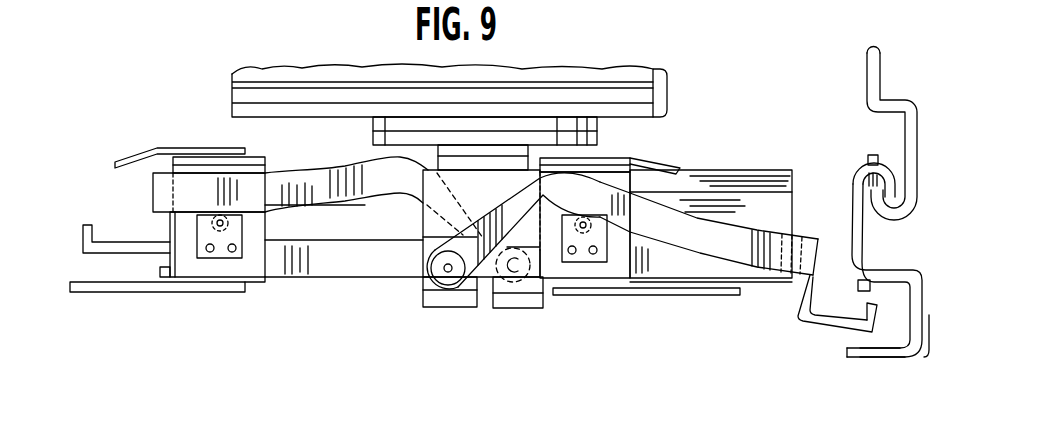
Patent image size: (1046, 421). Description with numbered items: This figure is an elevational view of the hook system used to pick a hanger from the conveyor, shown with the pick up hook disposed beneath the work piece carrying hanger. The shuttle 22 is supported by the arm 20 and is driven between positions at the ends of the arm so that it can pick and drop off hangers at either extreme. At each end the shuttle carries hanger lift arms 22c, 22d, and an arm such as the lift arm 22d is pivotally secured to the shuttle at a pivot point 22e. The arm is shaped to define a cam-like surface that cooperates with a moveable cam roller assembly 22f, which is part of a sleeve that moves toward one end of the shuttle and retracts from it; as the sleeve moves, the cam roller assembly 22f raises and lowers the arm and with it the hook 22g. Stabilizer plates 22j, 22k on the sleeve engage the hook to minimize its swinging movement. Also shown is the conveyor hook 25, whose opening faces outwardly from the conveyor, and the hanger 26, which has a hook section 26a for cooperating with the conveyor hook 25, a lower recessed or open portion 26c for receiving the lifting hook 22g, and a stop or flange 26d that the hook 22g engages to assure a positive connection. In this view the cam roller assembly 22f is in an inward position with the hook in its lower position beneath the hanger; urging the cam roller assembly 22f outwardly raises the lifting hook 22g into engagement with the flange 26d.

The arm 20 is at (549, 66).
The shuttle 22 is at (682, 107).
The hanger lift arm 22c is at (299, 200).
The hanger lift arm 22d is at (703, 247).
The pivot point 22e is at (453, 283).
The cam roller assembly 22f is at (217, 253).
The hook 22g is at (803, 322).
The stabilizer plate 22j is at (640, 151).
The stabilizer plate 22k is at (617, 293).
The conveyor hook 25 is at (862, 80).
The hanger 26 is at (915, 237).
The hook section 26a is at (853, 173).
The lower recessed portion 26c is at (927, 357).
The stop or flange 26d is at (857, 282).